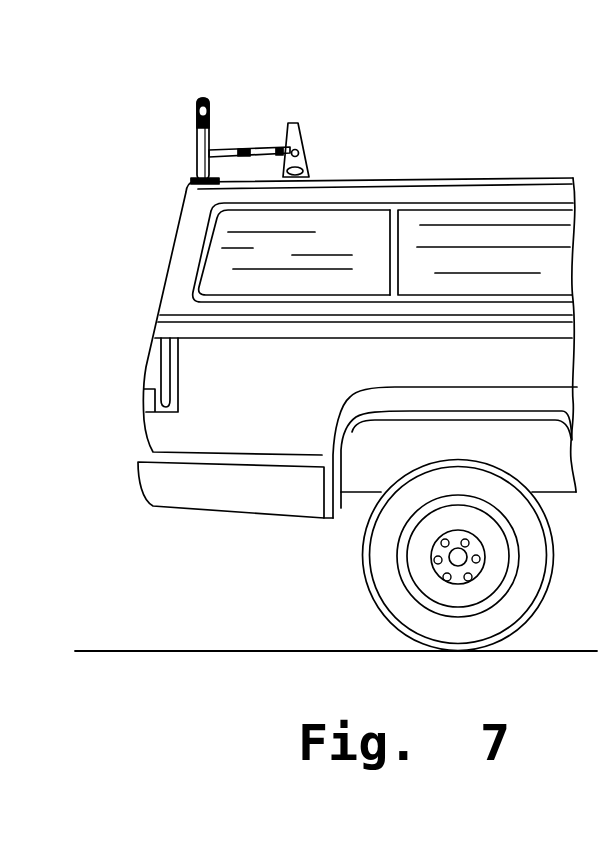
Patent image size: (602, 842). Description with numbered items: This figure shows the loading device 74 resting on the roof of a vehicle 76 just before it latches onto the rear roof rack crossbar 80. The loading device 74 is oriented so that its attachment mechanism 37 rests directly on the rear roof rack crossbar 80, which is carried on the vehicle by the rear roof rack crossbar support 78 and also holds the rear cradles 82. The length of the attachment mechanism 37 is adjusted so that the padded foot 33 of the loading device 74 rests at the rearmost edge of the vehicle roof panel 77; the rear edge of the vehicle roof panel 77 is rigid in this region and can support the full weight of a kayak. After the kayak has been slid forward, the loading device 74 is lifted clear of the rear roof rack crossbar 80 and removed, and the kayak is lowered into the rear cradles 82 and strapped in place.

The loading device 74 is at (193, 130).
The padded foot 33 is at (193, 181).
The vehicle roof panel 77 is at (188, 191).
The vehicle 76 is at (166, 265).
The attachment mechanism 37 is at (278, 138).
The rear cradles 82 is at (297, 123).
The rear roof rack crossbar 80 is at (300, 152).
The rear roof rack crossbar support 78 is at (310, 163).